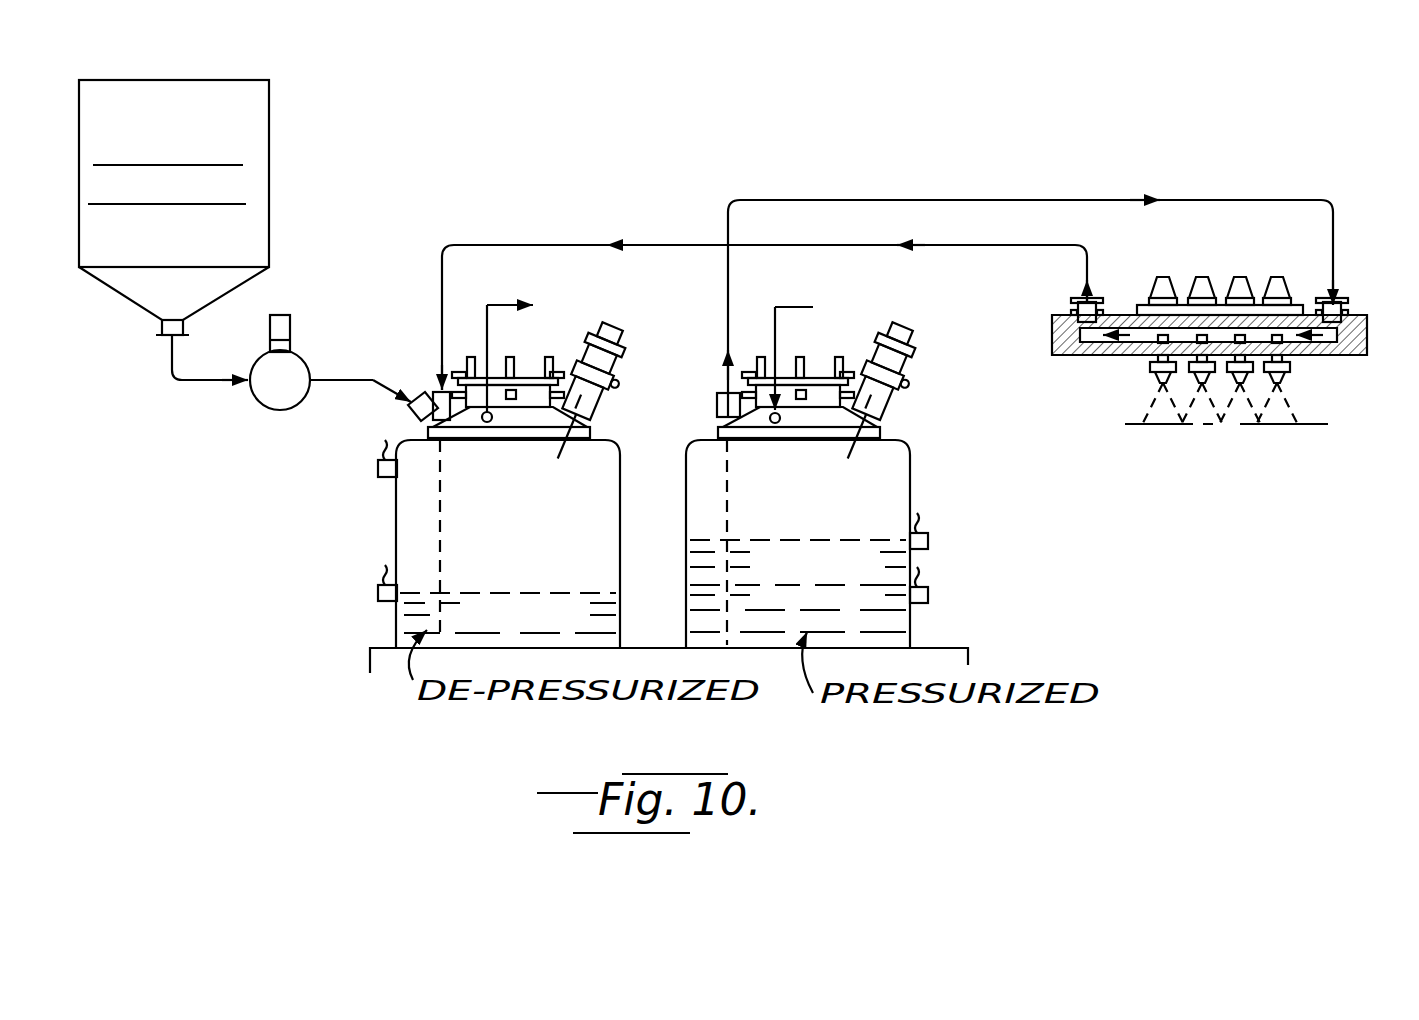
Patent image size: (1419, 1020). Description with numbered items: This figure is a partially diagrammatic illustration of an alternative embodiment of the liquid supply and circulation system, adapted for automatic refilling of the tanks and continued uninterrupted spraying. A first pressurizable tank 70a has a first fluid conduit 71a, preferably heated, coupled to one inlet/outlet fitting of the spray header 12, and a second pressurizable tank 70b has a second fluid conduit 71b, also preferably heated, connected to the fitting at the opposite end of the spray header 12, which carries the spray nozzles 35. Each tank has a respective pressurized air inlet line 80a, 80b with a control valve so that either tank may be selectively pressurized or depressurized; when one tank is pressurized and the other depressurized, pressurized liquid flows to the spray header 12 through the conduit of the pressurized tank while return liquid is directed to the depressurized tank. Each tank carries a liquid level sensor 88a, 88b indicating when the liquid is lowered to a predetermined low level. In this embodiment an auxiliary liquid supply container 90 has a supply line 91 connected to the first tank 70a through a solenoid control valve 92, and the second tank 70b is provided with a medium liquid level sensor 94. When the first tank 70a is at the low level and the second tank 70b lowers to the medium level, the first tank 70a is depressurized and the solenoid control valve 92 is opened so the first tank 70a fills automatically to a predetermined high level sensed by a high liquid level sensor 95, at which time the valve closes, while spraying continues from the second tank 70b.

The auxiliary liquid supply container 90 is at (258, 124).
The supply line 91 is at (368, 380).
The solenoid control valve 92 is at (253, 397).
The high liquid level sensor 95 is at (378, 473).
The first pressurizable tank 70a is at (407, 527).
The liquid level sensor 88a is at (378, 593).
The pressurized air inlet line 80a is at (487, 313).
The first fluid conduit 71a is at (553, 243).
The pressurized air inlet line 80b is at (775, 313).
The second pressurizable tank 70b is at (898, 482).
The medium liquid level sensor 94 is at (928, 540).
The liquid level sensor 88b is at (928, 595).
The second fluid conduit 71b is at (1270, 202).
The spray header 12 is at (1197, 350).
The spray nozzle 35 is at (1283, 378).